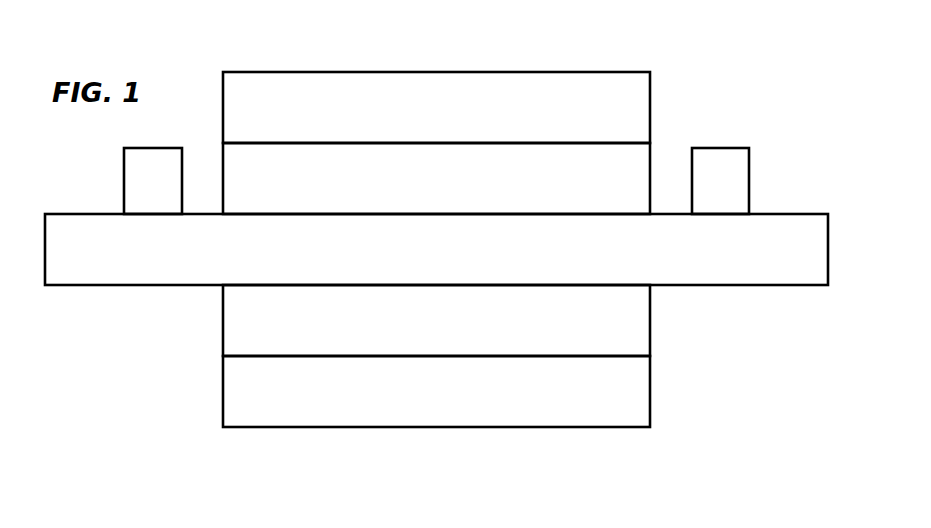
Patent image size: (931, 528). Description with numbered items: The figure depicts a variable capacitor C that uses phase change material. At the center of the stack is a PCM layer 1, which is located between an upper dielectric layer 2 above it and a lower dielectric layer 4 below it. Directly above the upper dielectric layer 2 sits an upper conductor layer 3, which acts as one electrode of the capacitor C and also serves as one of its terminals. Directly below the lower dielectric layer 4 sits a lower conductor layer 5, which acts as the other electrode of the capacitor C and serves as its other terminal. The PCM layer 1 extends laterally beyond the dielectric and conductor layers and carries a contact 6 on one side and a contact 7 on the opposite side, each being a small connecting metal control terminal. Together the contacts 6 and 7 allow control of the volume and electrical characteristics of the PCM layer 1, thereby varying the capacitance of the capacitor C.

The variable capacitor C is at (747, 76).
The PCM layer 1 is at (436, 249).
The upper dielectric layer 2 is at (436, 178).
The upper conductor layer 3 is at (436, 107).
The lower dielectric layer 4 is at (436, 320).
The lower conductor layer 5 is at (436, 391).
The contact 6 is at (153, 181).
The contact 7 is at (720, 181).